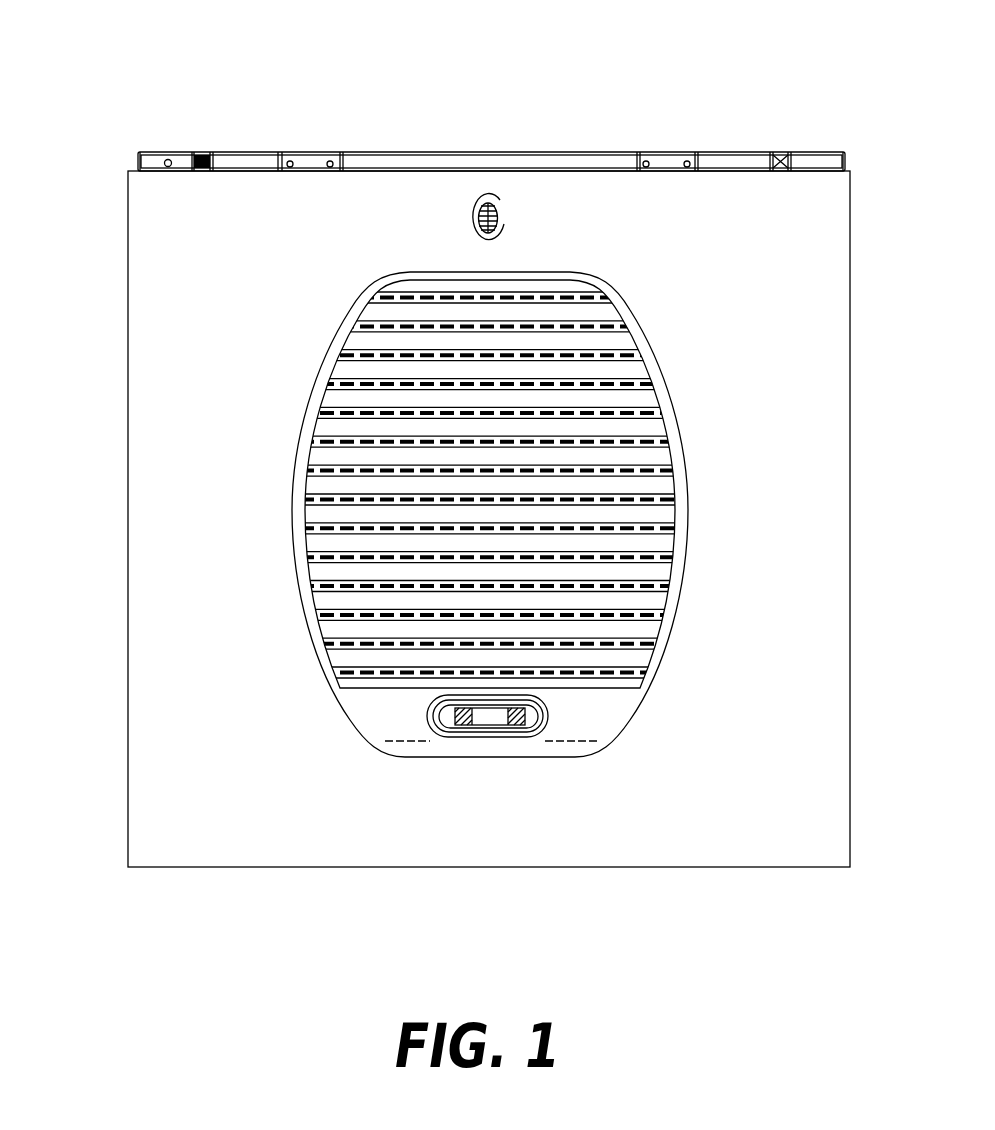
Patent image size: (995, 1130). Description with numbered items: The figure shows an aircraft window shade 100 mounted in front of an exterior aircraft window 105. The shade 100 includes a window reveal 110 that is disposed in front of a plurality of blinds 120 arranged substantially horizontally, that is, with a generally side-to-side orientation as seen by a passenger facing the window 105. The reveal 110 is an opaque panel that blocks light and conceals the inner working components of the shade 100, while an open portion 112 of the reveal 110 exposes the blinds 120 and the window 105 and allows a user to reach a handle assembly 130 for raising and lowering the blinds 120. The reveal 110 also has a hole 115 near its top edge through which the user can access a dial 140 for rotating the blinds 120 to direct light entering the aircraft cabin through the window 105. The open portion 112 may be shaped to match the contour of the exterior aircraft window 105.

The aircraft window shade 100 is at (168, 81).
The window reveal 110 is at (142, 210).
The open portion 112 is at (260, 317).
The hole 115 is at (474, 186).
The dial 140 is at (498, 208).
The exterior aircraft window 105 is at (323, 450).
The blinds 120 is at (640, 342).
The handle assembly 130 is at (594, 722).